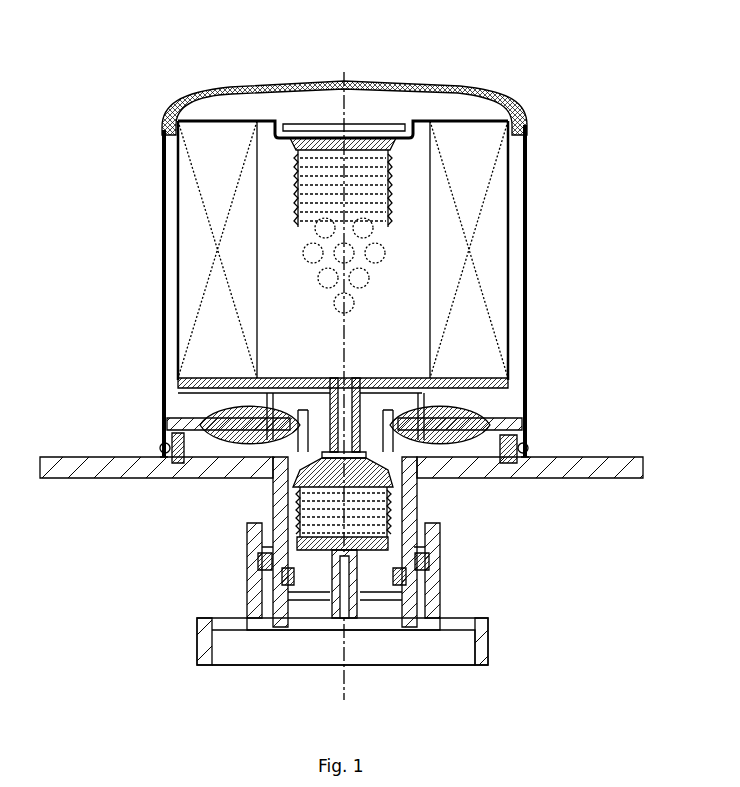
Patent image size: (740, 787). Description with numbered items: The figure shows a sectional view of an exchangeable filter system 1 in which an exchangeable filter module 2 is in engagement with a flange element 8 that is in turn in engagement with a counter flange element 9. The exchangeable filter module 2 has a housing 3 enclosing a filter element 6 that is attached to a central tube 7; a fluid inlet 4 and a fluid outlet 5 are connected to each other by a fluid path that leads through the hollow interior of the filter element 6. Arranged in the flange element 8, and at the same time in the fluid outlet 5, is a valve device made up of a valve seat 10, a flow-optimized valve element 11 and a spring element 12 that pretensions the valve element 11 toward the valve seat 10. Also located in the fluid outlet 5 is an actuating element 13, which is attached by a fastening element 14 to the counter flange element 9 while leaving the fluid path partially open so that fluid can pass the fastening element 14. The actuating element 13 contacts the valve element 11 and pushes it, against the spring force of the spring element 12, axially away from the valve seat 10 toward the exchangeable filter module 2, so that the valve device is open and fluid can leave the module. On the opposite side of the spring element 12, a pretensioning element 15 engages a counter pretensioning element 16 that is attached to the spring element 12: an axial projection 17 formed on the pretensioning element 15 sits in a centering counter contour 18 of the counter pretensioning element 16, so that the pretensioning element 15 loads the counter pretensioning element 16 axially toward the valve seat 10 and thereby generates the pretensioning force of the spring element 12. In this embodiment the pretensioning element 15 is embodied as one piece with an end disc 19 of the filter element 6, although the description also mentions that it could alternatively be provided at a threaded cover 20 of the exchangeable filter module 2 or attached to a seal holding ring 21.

The exchangeable filter system 1 is at (117, 94).
The exchangeable filter module 2 is at (240, 84).
The housing 3 is at (162, 240).
The fluid inlet 4 is at (230, 470).
The fluid outlet 5 is at (380, 652).
The filter element 6 is at (213, 208).
The central tube 7 is at (430, 265).
The flange element 8 is at (410, 511).
The counter flange element 9 is at (433, 593).
The valve seat 10 is at (367, 553).
The valve element 11 is at (385, 543).
The spring element 12 is at (300, 520).
The actuating element 13 is at (333, 592).
The fastening element 14 is at (308, 622).
The pretensioning element 15 is at (362, 400).
The counter pretensioning element 16 is at (527, 442).
The axial projection 17 is at (293, 413).
The centering counter contour 18 is at (243, 432).
The end disc 19 is at (270, 407).
The threaded cover 20 is at (242, 460).
The seal holding ring 21 is at (475, 417).